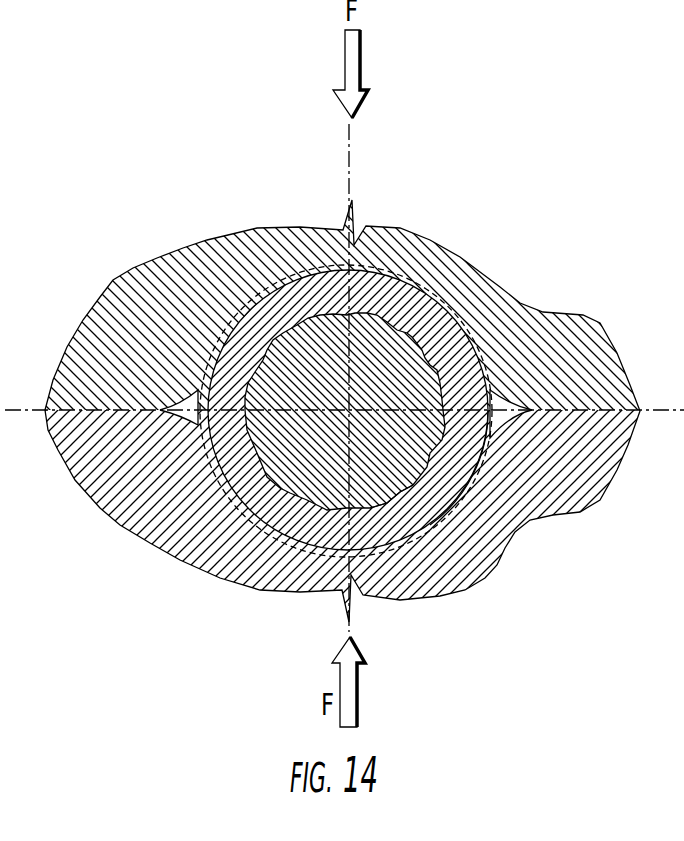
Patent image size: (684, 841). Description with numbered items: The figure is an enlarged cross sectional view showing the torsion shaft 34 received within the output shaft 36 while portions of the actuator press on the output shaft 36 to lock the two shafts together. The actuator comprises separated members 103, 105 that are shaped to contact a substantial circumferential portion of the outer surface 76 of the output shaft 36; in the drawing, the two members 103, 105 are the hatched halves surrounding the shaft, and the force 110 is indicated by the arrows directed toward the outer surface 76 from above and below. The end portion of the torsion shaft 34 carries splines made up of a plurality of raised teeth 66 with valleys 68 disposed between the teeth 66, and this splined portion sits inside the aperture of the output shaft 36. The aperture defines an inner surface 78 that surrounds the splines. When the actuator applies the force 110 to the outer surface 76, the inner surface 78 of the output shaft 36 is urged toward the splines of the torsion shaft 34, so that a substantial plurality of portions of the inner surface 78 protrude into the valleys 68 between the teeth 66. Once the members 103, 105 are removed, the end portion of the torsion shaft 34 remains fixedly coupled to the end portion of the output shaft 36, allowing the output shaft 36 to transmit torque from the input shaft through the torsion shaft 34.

The torsion shaft 34 is at (383, 372).
The output shaft 36 is at (449, 500).
The raised teeth 66 is at (440, 422).
The valleys 68 is at (392, 494).
The outer surface 76 is at (378, 280).
The inner surface 78 is at (108, 512).
The separated member 103 is at (205, 290).
The separated member 105 is at (158, 552).
The force 110 is at (358, 80).